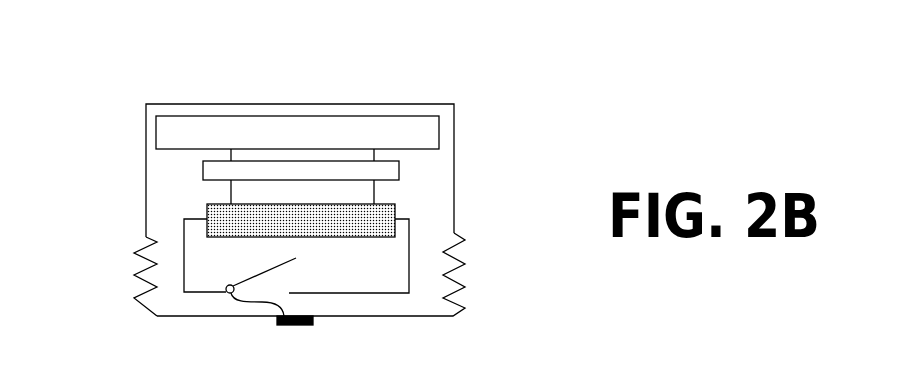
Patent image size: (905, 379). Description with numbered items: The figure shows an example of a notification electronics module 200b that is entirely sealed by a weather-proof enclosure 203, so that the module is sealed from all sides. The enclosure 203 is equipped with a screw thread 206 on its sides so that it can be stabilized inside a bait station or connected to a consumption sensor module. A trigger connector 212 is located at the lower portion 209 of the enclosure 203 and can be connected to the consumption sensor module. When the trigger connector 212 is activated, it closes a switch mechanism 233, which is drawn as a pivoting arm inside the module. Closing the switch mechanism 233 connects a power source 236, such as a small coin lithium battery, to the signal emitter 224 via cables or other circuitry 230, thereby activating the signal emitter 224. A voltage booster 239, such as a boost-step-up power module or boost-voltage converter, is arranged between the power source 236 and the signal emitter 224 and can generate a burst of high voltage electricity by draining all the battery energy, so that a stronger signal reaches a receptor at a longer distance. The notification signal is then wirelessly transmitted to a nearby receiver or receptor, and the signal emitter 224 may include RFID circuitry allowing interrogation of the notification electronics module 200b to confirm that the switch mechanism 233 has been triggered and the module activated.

The notification electronics module 200b is at (245, 84).
The enclosure 203 is at (187, 104).
The screw thread 206 is at (136, 302).
The lower portion 209 is at (380, 318).
The signal emitter 224 is at (394, 104).
The voltage booster 239 is at (399, 170).
The cables or other circuitry 230 is at (233, 189).
The power source 236 is at (395, 205).
The switch mechanism 233 is at (227, 300).
The trigger connector 212 is at (295, 325).